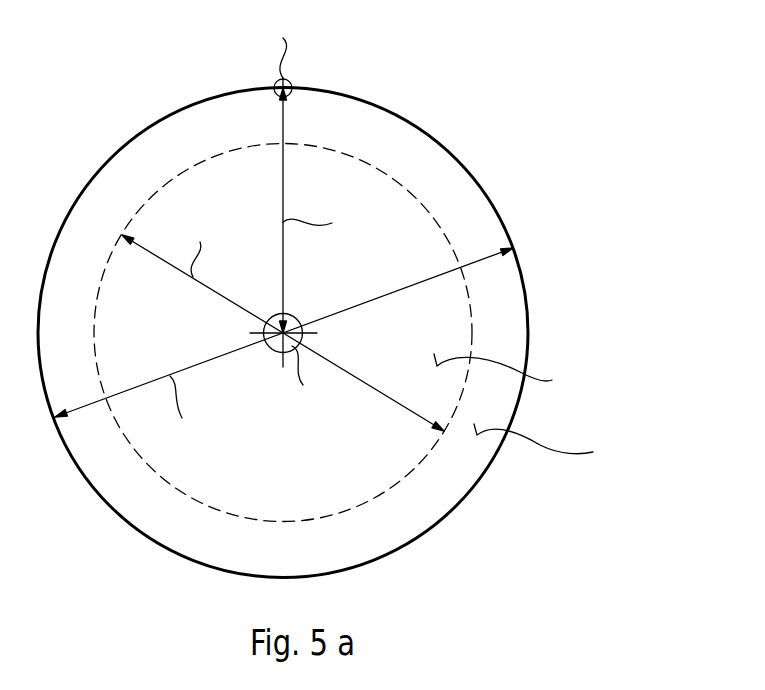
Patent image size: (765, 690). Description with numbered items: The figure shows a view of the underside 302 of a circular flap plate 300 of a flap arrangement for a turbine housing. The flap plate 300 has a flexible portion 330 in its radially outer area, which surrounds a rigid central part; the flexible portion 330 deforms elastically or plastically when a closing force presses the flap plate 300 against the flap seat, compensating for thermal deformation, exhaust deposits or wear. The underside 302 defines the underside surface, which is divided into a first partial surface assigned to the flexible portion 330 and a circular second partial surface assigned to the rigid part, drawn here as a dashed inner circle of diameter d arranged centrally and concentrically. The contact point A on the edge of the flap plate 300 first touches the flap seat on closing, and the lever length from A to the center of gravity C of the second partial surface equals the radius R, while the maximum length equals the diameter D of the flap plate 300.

The flap plate 300 is at (343, 290).
The flexible portion 330 is at (510, 323).
The underside 302 is at (436, 479).